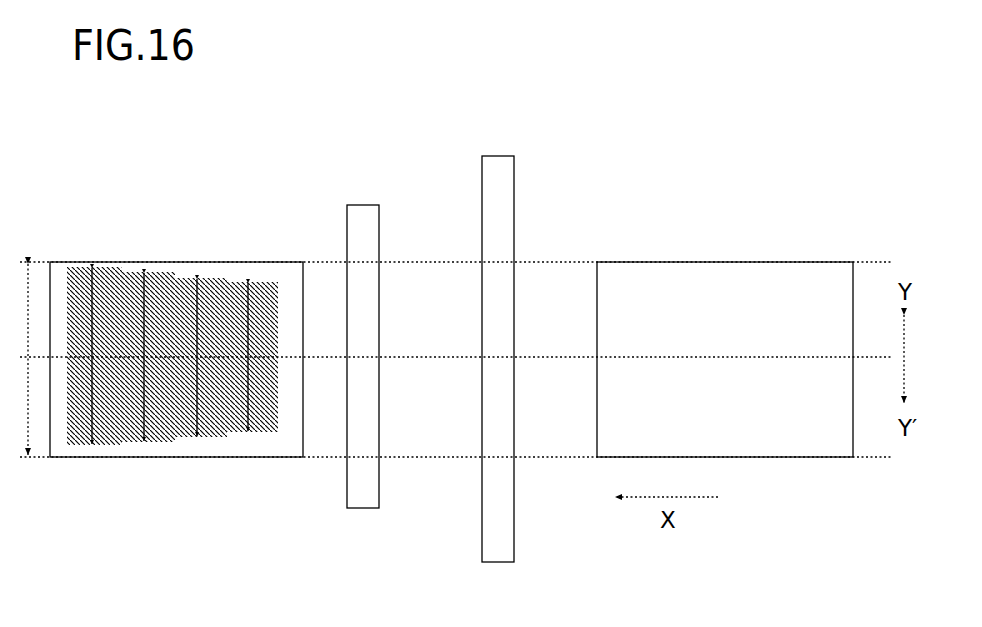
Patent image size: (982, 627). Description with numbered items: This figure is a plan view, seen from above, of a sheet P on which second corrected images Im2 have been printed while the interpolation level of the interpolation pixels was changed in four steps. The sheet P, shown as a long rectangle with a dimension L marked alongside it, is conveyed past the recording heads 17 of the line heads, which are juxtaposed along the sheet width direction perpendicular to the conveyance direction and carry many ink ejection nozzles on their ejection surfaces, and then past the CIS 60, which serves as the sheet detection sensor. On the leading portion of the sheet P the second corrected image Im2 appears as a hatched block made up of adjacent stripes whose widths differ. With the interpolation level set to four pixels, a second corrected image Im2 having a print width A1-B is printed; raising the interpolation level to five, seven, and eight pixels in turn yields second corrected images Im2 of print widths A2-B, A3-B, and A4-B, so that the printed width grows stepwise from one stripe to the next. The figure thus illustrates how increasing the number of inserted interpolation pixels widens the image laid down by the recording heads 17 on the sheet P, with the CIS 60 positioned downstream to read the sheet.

The recording head 17 is at (362, 207).
The CIS 60 is at (515, 172).
The sheet P is at (225, 262).
The second corrected image Im2 is at (172, 285).
The sheet length L is at (15, 359).
The print width A1-B is at (248, 431).
The print width A2-B is at (197, 436).
The print width A3-B is at (144, 441).
The print width A4-B is at (92, 444).